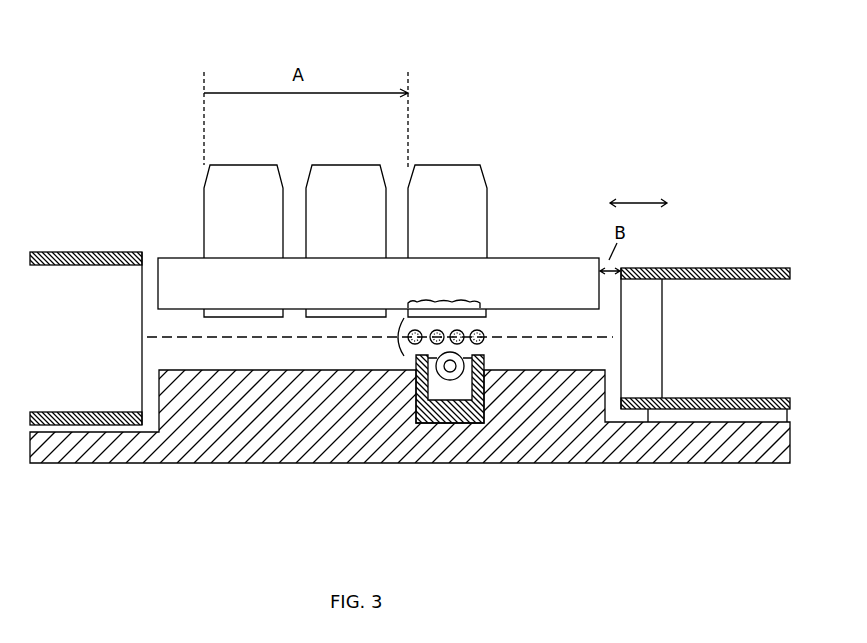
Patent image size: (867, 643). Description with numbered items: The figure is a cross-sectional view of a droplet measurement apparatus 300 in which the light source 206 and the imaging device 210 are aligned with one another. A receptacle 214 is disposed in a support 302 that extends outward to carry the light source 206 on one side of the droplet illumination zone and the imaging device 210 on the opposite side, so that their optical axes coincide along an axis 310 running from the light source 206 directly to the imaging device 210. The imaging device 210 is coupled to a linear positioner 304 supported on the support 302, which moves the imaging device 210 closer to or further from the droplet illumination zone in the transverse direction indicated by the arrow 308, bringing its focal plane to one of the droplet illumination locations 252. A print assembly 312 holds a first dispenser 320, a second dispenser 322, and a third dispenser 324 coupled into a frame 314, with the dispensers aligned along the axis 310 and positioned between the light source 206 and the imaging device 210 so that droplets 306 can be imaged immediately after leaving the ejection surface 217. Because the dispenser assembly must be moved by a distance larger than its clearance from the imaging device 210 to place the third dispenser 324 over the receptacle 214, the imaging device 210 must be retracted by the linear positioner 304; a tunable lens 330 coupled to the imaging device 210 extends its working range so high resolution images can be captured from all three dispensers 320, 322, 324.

The droplet measurement apparatus 300 is at (554, 104).
The print assembly 312 is at (591, 158).
The arrow 308 is at (638, 198).
The light source 206 is at (112, 251).
The frame 314 is at (180, 257).
The ejection surface 217 is at (490, 324).
The third dispenser 324 is at (238, 162).
The second dispenser 322 is at (340, 162).
The first dispenser 320 is at (458, 162).
The droplet illumination location 252 is at (447, 300).
The axis 310 is at (257, 340).
The droplets 306 is at (398, 340).
The support 302 is at (108, 466).
The linear positioner 304 is at (708, 420).
The receptacle 214 is at (452, 425).
The imaging device 210 is at (712, 267).
The tunable lens 330 is at (648, 267).